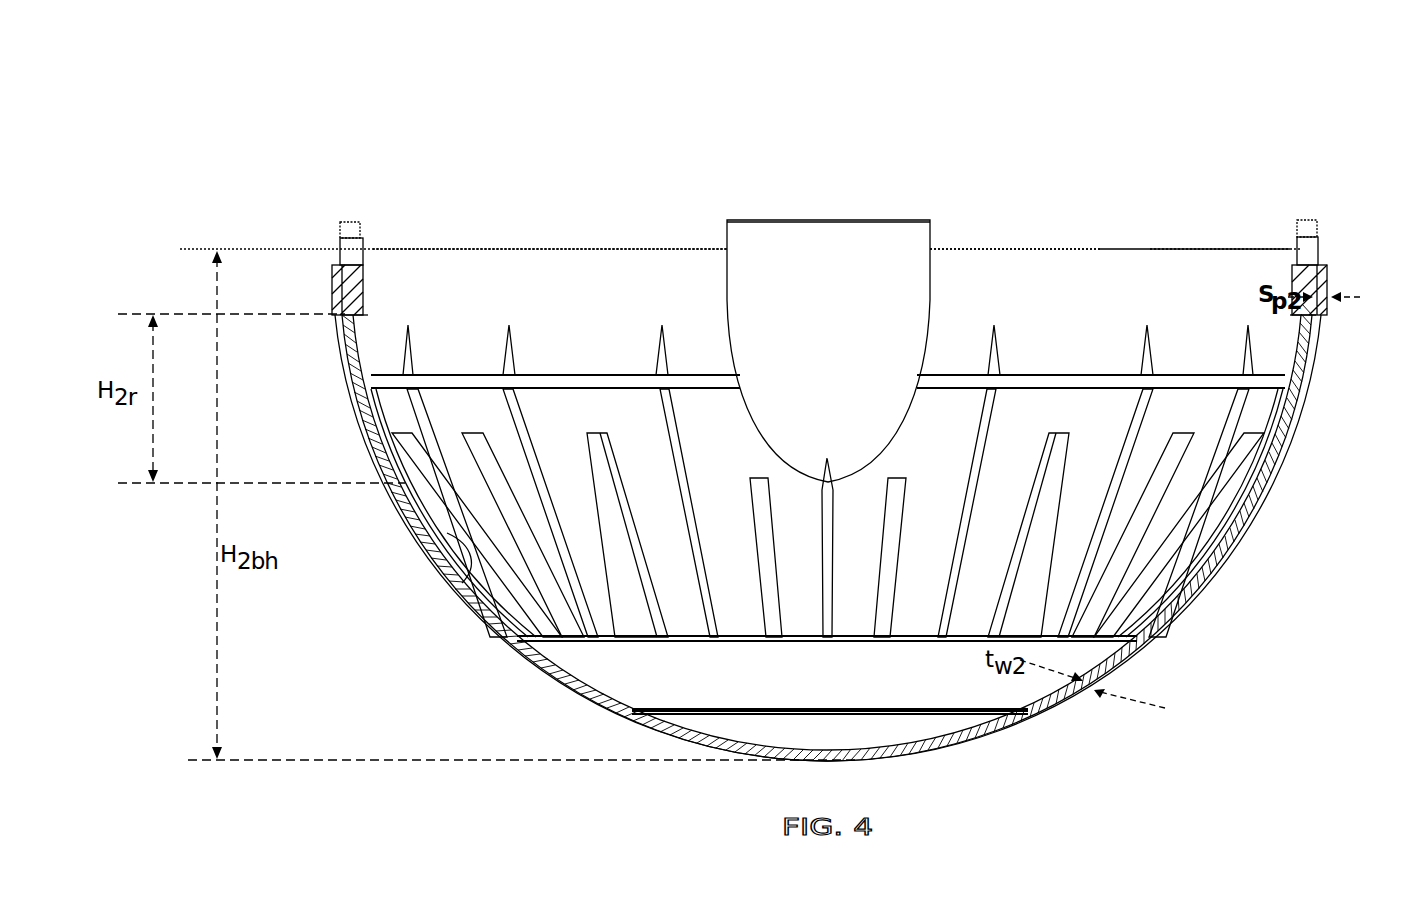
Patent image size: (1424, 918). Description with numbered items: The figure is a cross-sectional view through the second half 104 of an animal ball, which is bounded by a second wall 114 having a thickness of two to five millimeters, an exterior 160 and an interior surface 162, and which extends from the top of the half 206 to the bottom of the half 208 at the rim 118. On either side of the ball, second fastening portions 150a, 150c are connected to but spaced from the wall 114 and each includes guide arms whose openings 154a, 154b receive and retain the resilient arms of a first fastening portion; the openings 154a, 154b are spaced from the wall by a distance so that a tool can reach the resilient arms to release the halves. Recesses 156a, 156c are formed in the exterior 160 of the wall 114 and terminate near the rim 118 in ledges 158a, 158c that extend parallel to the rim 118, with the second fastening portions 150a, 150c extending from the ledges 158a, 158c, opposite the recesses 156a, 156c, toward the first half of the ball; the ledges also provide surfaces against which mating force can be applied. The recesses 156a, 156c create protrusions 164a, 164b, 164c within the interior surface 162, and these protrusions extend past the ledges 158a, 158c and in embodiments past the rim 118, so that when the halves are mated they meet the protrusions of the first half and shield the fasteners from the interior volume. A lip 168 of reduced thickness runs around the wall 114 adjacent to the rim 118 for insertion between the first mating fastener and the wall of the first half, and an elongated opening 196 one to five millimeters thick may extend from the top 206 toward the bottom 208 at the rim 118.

The second half of the ball 104 is at (1187, 116).
The bottom of the second half 208 is at (905, 168).
The lip 168 is at (343, 225).
The second fastening portion 150a is at (345, 258).
The second fastening portion 150c is at (1315, 254).
The opening 154a is at (350, 287).
The opening 154b is at (1303, 277).
The ledge 158a is at (342, 316).
The ledge 158c is at (1316, 318).
The recess 156a is at (368, 407).
The recess 156c is at (1313, 390).
The protrusion 164a is at (370, 343).
The protrusion 164b is at (866, 358).
The protrusion 164c is at (1292, 327).
The exterior of the wall 160 is at (1187, 607).
The elongated opening 196 is at (462, 583).
The second wall 114 is at (587, 257).
The rim 118 is at (1010, 249).
The interior surface 162 is at (1105, 262).
The top of the second half 206 is at (735, 825).